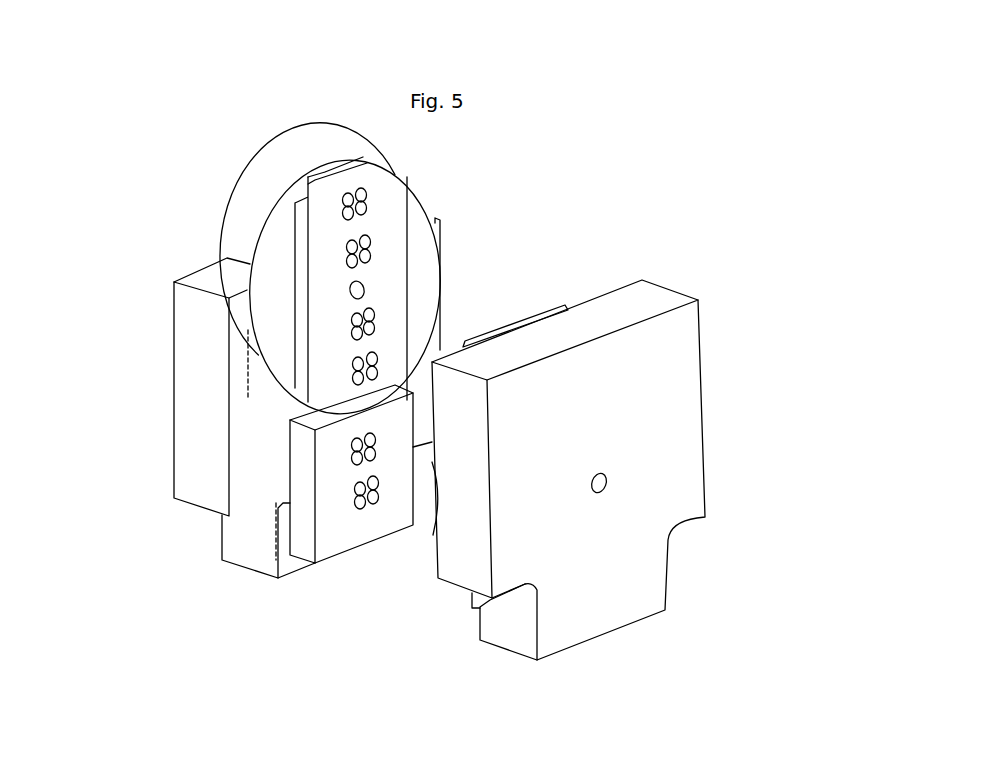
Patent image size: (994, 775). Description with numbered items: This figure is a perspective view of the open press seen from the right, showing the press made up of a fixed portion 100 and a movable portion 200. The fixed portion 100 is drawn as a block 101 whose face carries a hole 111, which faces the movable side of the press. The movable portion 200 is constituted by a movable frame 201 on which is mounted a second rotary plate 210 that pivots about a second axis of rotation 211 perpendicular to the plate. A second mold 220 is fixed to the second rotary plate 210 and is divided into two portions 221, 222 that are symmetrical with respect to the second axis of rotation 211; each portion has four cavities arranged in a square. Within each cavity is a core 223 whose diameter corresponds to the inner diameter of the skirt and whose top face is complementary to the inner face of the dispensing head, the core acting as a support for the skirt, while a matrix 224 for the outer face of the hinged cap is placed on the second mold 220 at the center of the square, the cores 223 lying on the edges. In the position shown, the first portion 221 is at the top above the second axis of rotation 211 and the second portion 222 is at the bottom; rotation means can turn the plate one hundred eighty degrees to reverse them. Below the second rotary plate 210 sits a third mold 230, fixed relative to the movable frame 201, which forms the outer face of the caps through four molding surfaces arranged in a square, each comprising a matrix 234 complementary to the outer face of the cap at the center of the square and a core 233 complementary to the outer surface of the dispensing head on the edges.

The fixed portion 100 is at (718, 252).
The housing body 101 is at (638, 568).
The hole 111 is at (603, 480).
The movable portion 200 is at (210, 124).
The movable frame 201 is at (187, 322).
The second rotary plate 210 is at (415, 213).
The second axis of rotation 211 is at (350, 288).
The second mold 220 is at (300, 230).
The first portion of the second mold 221 is at (382, 192).
The second portion of the second mold 222 is at (330, 382).
The core 223 is at (346, 196).
The matrix 224 is at (347, 218).
The third mold 230 is at (327, 454).
The core 233 is at (373, 503).
The matrix 234 is at (367, 457).